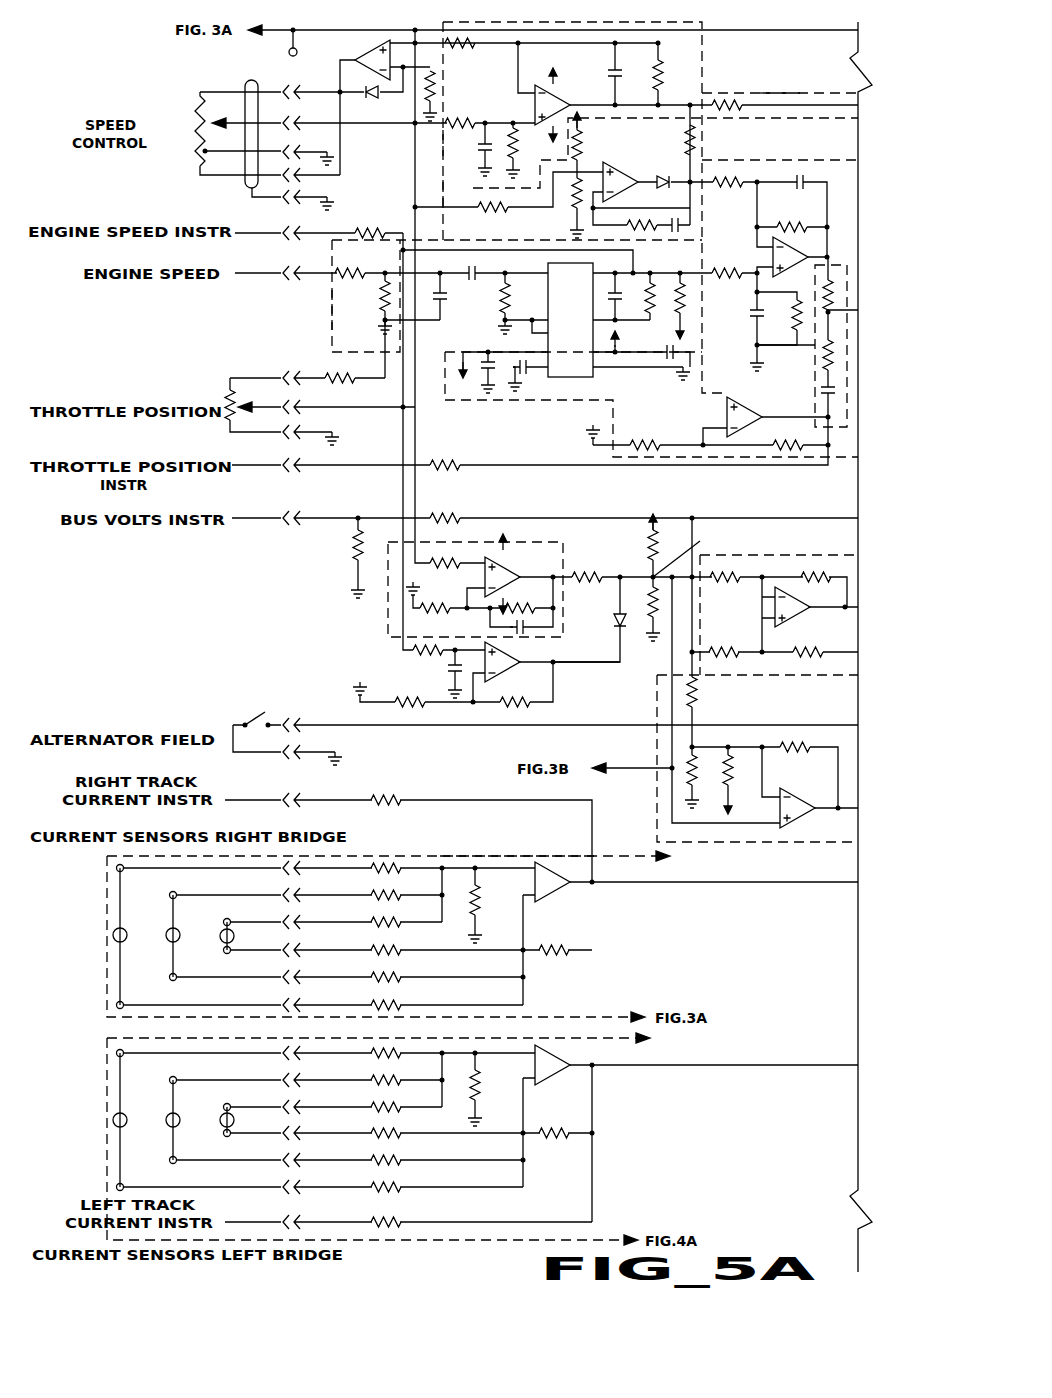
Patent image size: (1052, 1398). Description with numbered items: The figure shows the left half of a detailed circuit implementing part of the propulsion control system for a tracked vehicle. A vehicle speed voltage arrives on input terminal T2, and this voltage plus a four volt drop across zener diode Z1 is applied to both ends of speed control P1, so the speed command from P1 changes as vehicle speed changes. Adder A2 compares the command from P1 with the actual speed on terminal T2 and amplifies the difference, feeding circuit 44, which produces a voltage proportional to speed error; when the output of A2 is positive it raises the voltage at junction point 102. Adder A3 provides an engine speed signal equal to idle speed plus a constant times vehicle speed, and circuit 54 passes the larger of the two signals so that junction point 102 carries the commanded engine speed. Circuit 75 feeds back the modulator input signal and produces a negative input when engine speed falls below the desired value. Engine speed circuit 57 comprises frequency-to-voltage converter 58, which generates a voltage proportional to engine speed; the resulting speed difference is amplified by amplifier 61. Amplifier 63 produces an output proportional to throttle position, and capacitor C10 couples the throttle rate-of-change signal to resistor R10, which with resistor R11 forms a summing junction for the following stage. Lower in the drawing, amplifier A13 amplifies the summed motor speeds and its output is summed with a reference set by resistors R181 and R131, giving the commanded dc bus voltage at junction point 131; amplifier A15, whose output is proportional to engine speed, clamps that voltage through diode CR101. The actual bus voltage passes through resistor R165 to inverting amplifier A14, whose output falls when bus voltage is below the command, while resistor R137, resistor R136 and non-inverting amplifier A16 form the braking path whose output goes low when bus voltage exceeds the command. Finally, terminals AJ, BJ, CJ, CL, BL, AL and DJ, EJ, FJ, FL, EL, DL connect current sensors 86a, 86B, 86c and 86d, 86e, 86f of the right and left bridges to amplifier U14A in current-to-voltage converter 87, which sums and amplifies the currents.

The speed control P1 is at (196, 110).
The input terminal T2 is at (289, 53).
The zener diode Z1 is at (340, 74).
The circuit 44 is at (443, 145).
The circuit 54 is at (443, 195).
The adder A2 is at (530, 94).
The adder A3 is at (607, 165).
The junction point 102 is at (673, 166).
The circuit 75 is at (770, 93).
The engine speed circuit 57 is at (332, 307).
The frequency-to-voltage converter 58 is at (593, 378).
The amplifier 61 is at (773, 256).
The resistor R11 is at (757, 290).
The resistor R10 is at (757, 340).
The capacitor C10 is at (815, 390).
The amplifier 63 is at (727, 427).
The resistor R181 is at (650, 546).
The junction point 131 is at (693, 552).
The amplifier A13 is at (483, 590).
The diode CR101 is at (617, 622).
The amplifier A15 is at (490, 676).
The resistor R131 is at (650, 615).
The resistor R165 is at (731, 648).
The inverting amplifier A14 is at (790, 624).
The resistor R137 is at (698, 700).
The non-inverting amplifier A16 is at (822, 772).
The resistor R136 is at (672, 785).
The current-to-voltage converter 87 is at (500, 856).
The amplifier U14A is at (558, 893).
The terminal AJ is at (116, 867).
The terminal BJ is at (170, 894).
The terminal CJ is at (224, 921).
The terminal CL is at (232, 953).
The terminal BL is at (177, 982).
The terminal AL is at (116, 1006).
The current sensor 86a is at (113, 939).
The current sensor 86B is at (168, 942).
The current sensor 86c is at (221, 941).
The terminal DJ is at (116, 1052).
The terminal EJ is at (170, 1079).
The terminal FJ is at (224, 1106).
The terminal FL is at (233, 1129).
The terminal EL is at (178, 1163).
The terminal DL is at (117, 1188).
The current sensor 86d is at (113, 1120).
The current sensor 86e is at (169, 1128).
The current sensor 86f is at (224, 1126).